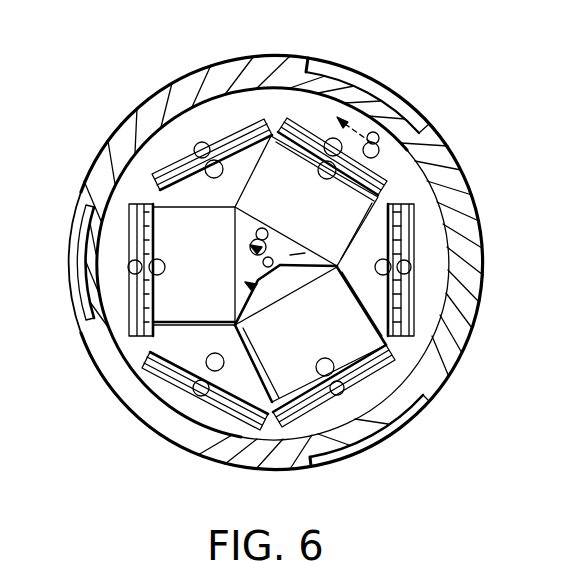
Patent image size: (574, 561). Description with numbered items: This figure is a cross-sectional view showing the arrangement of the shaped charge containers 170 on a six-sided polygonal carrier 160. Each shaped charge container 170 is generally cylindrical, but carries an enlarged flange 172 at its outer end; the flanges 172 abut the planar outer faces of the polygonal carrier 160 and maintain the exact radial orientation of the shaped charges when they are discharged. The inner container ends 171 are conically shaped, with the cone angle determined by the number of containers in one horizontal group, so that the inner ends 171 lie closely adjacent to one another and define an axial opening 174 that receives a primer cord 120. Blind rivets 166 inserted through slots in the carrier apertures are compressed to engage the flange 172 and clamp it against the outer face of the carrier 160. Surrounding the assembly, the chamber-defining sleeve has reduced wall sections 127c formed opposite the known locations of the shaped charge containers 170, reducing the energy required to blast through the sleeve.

The primer cord 120 is at (337, 267).
The reduced wall sections 127c is at (78, 305).
The polygonal carrier 160 is at (405, 347).
The blind rivet 166 is at (383, 267).
The shaped charge containers 170 is at (273, 132).
The inner container ends 171 is at (280, 292).
The flange 172 is at (140, 200).
The axial opening 174 is at (256, 249).